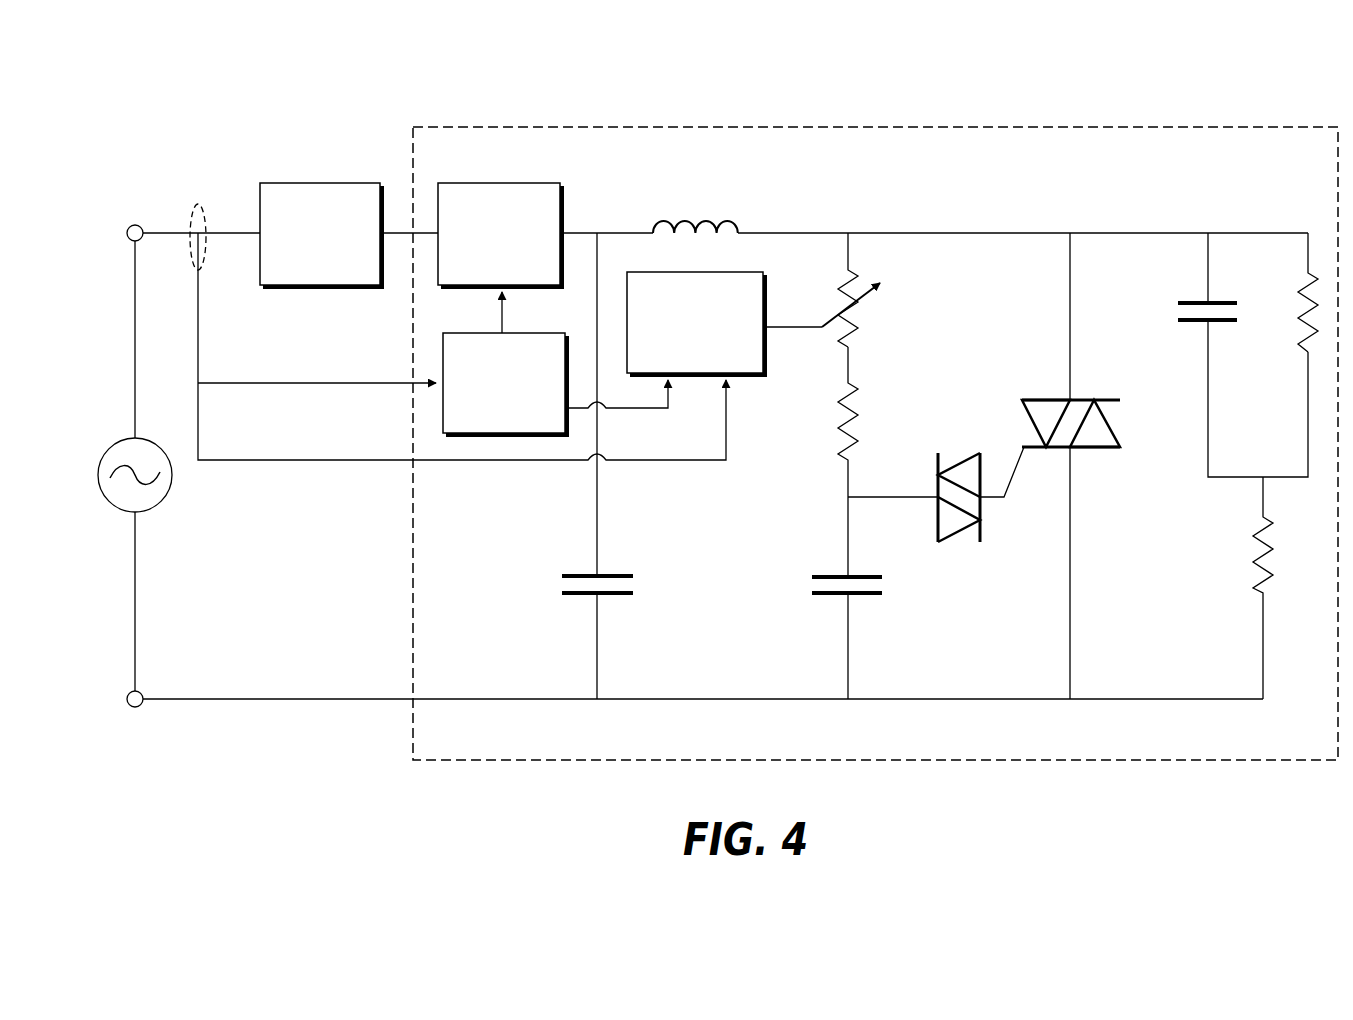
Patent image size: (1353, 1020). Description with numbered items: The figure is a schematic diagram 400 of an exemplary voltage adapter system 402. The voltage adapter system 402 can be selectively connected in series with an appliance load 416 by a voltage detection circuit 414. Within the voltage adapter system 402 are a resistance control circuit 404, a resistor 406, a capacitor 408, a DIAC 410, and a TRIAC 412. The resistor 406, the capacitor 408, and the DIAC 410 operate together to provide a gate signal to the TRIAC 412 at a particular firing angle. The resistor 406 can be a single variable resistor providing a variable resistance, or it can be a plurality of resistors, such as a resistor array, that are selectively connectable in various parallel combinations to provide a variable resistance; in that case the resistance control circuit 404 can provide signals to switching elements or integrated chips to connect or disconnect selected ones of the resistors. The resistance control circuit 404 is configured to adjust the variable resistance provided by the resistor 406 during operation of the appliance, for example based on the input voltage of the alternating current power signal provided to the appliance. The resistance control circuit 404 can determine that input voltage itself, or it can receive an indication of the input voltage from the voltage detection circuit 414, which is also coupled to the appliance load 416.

The schematic diagram 400 is at (226, 90).
The voltage adapter system 402 is at (413, 127).
The resistance control circuit 404 is at (740, 268).
The resistor 406 is at (860, 315).
The capacitor 408 is at (872, 598).
The DIAC 410 is at (936, 512).
The TRIAC 412 is at (1094, 400).
The voltage detection circuit 414 is at (485, 333).
The appliance load 416 is at (260, 183).